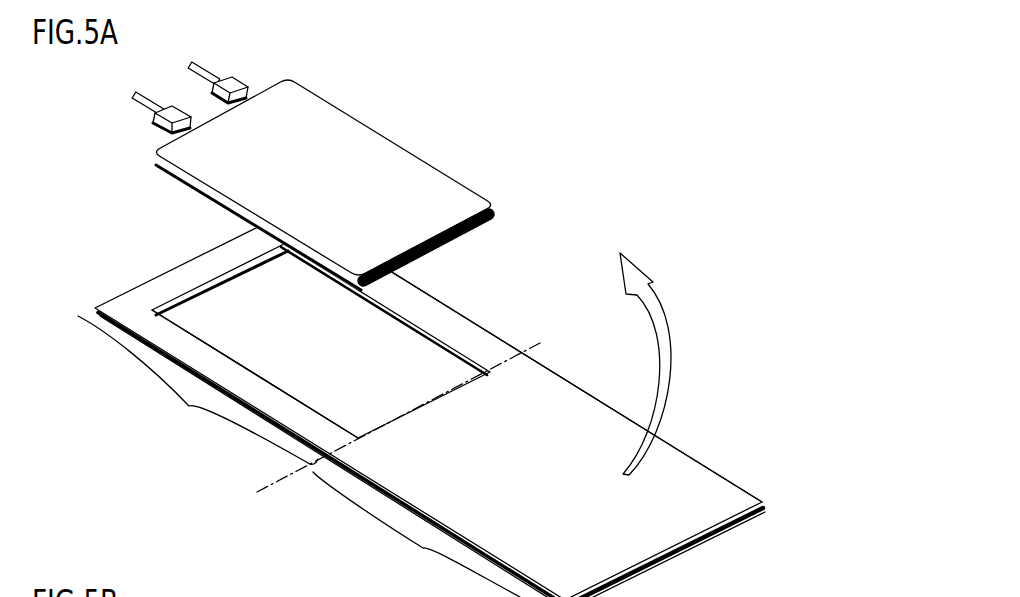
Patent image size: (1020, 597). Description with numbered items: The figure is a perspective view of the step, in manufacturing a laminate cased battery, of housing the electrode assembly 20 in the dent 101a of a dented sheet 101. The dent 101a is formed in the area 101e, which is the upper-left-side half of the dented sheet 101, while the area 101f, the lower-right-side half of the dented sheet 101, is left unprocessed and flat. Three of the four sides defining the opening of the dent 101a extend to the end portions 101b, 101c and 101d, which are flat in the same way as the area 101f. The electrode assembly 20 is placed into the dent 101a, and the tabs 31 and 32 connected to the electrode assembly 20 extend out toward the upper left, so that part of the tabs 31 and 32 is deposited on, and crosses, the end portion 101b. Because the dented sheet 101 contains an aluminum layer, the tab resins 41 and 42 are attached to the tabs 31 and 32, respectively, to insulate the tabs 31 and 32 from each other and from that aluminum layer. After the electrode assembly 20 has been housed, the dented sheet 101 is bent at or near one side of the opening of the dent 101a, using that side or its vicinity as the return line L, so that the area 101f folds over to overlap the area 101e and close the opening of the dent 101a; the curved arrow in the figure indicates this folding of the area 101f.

The electrode assembly 20 is at (366, 143).
The tab 31 is at (203, 65).
The tab 32 is at (136, 94).
The tab resin 41 is at (233, 79).
The tab resin 42 is at (154, 115).
The dented sheet 101 is at (700, 481).
The dent 101a is at (210, 320).
The end portion 101b is at (201, 254).
The end portion 101c is at (287, 402).
The end portion 101d is at (431, 305).
The area 101e is at (198, 390).
The area 101f is at (416, 534).
The return line L is at (261, 490).